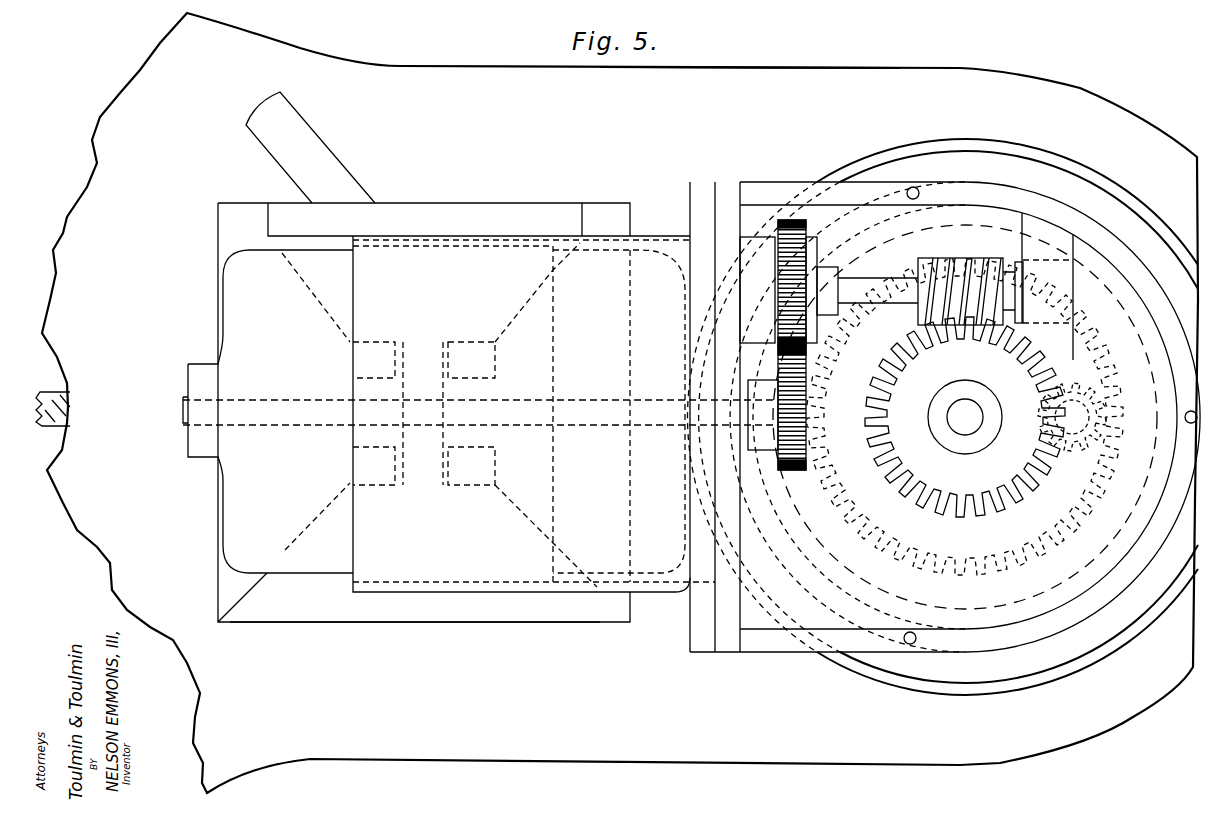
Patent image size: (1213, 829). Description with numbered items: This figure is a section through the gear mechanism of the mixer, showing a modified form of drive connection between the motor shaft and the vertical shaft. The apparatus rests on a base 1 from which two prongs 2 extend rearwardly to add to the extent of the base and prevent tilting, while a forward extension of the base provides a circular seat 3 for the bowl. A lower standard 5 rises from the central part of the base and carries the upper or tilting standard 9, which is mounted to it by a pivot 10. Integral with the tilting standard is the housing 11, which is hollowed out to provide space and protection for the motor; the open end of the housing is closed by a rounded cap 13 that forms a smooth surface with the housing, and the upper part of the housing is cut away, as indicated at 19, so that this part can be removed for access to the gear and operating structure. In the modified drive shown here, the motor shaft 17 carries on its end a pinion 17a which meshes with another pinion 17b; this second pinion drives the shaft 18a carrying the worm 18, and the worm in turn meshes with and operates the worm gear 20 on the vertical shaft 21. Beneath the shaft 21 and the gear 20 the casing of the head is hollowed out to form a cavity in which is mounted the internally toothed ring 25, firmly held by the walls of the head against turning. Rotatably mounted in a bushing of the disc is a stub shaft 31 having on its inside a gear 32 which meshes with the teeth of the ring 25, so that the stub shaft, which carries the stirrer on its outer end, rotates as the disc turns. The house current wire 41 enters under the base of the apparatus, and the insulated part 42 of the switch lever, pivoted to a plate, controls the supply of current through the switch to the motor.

The base 1 is at (765, 75).
The prongs 2 is at (246, 33).
The circular seat 3 is at (983, 143).
The lower standard 5 is at (298, 600).
The upper or tilting standard 9 is at (390, 345).
The pivot 10 is at (436, 345).
The housing 11 is at (442, 255).
The cap 13 is at (240, 287).
The motor shaft 17 is at (720, 433).
The pinion 17a is at (792, 470).
The pinion 17b is at (793, 222).
The worm 18 is at (975, 240).
The worm shaft 18a is at (872, 282).
The cut-away part of housing 19 is at (1018, 198).
The worm gear 20 is at (870, 387).
The shaft 21 is at (968, 405).
The internally toothed ring 25 is at (1125, 305).
The stub shaft 31 is at (1086, 462).
The gear 32 is at (1033, 440).
The house wire 41 is at (60, 396).
The insulated part of switch lever 42 is at (310, 135).